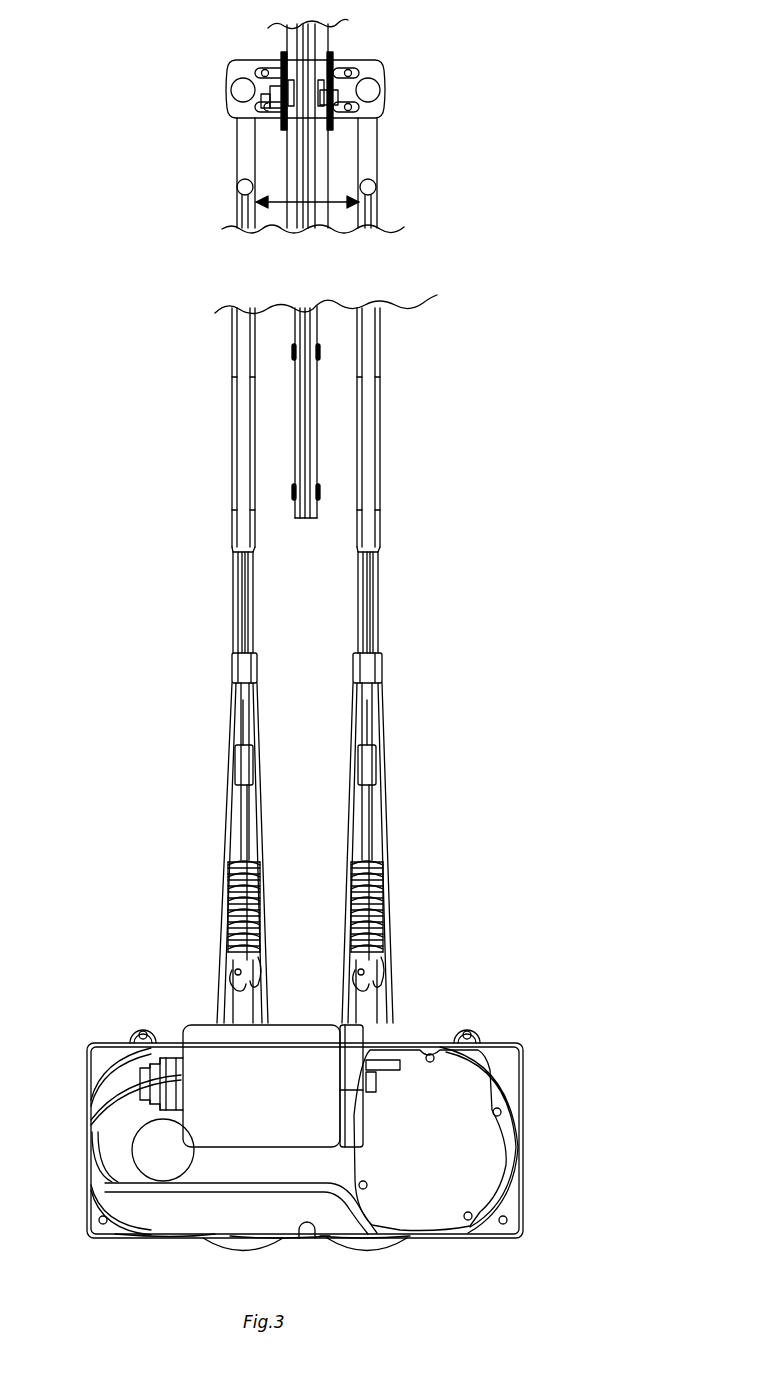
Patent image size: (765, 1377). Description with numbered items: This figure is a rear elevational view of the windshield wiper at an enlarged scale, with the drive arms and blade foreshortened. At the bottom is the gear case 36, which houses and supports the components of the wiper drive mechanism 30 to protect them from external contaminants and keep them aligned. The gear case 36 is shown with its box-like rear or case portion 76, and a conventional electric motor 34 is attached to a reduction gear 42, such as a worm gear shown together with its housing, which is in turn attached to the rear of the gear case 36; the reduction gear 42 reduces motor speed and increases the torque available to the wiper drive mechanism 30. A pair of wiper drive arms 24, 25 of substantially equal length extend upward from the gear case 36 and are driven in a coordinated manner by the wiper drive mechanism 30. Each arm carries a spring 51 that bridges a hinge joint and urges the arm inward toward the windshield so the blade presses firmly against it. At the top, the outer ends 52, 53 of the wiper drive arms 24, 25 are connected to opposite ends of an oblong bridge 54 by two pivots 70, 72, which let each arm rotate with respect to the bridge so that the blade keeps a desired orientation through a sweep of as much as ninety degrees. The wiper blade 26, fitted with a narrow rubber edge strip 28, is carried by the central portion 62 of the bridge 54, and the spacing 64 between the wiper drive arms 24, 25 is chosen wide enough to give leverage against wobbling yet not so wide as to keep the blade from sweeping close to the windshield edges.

The wiper drive arm 24 is at (370, 363).
The wiper drive arm 25 is at (240, 462).
The wiper blade 26 is at (325, 155).
The edge strip 28 is at (306, 520).
The wiper drive mechanism 30 is at (420, 1040).
The electric motor 34 is at (246, 1133).
The gear case 36 is at (115, 1042).
The reduction gear 42 is at (460, 1108).
The spring 51 is at (234, 910).
The outer end of wiper drive arm 52 is at (370, 143).
The outer end of wiper drive arm 53 is at (240, 149).
The bridge 54 is at (371, 66).
The central portion of the bridge 62 is at (332, 62).
The spacing between the wiper drive arms 64 is at (275, 207).
The pivot 70 is at (380, 89).
The pivot 72 is at (242, 90).
The rear or case portion 76 is at (177, 1218).